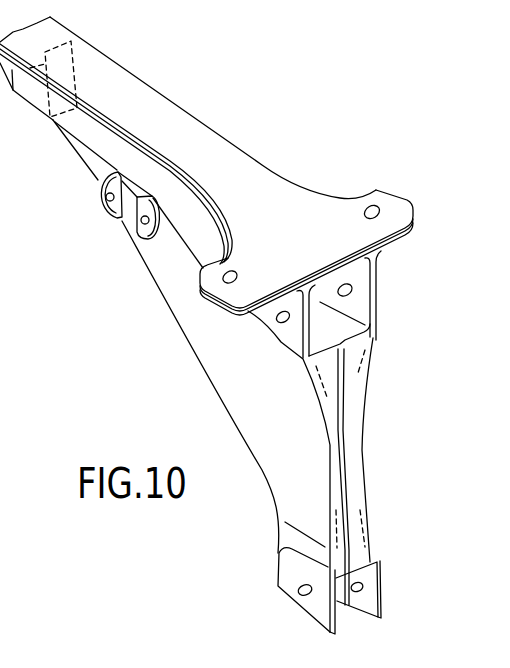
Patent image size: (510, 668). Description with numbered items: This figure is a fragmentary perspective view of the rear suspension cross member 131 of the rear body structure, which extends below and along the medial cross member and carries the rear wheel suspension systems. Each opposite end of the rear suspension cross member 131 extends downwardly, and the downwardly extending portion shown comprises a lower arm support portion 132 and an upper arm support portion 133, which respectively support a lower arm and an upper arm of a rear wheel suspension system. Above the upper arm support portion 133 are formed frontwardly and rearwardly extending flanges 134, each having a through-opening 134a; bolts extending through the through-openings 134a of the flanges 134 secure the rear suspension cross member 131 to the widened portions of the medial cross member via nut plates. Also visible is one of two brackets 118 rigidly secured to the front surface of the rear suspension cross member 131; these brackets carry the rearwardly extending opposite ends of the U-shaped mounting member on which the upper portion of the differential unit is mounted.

The bracket 118 is at (97, 200).
The rear suspension cross member 131 is at (277, 166).
The lower arm support portion 132 is at (279, 560).
The upper arm support portion 133 is at (377, 310).
The flange 134 is at (409, 202).
The through-opening 134a is at (373, 206).